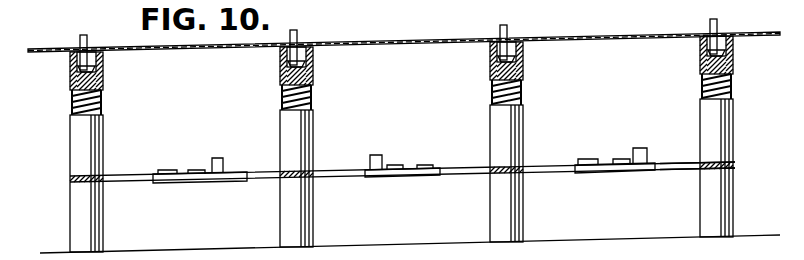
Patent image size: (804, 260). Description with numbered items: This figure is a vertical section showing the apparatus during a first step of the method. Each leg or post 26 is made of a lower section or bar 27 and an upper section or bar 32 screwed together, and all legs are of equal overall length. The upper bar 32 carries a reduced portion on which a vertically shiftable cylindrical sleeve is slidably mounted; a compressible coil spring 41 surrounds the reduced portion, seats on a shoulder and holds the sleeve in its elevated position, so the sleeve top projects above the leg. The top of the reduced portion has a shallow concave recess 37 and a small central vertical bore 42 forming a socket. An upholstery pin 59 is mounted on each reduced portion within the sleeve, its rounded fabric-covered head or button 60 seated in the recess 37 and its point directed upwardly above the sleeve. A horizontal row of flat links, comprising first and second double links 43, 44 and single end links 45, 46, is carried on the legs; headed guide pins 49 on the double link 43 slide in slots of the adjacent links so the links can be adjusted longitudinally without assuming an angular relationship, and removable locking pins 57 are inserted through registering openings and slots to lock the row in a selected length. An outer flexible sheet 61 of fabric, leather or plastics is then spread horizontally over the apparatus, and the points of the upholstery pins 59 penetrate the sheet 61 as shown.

The leg or post 26 is at (62, 148).
The lower section or bar 27 is at (525, 203).
The upper section or bar 32 is at (525, 148).
The concave recess 37 is at (72, 85).
The compressible coil spring 41 is at (100, 107).
The central vertical bore 42 is at (520, 75).
The first double link 43 is at (258, 181).
The second double link 44 is at (567, 171).
The single end link 45 is at (130, 180).
The single end link 46 is at (678, 169).
The headed guide pin 49 is at (596, 159).
The removable locking pin 57 is at (642, 148).
The upholstery pin 59 is at (80, 48).
The rounded fabric-covered head or button 60 is at (102, 77).
The outer flexible sheet 61 is at (373, 43).